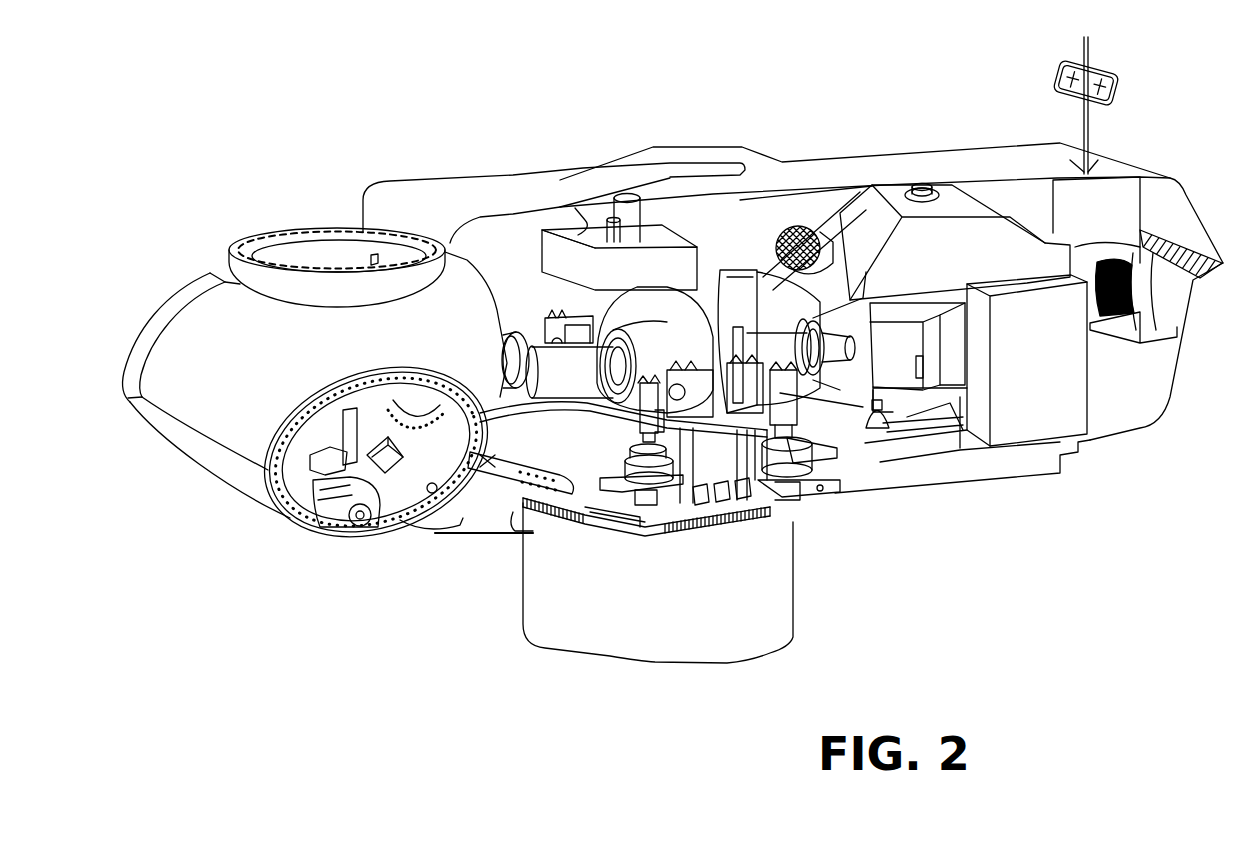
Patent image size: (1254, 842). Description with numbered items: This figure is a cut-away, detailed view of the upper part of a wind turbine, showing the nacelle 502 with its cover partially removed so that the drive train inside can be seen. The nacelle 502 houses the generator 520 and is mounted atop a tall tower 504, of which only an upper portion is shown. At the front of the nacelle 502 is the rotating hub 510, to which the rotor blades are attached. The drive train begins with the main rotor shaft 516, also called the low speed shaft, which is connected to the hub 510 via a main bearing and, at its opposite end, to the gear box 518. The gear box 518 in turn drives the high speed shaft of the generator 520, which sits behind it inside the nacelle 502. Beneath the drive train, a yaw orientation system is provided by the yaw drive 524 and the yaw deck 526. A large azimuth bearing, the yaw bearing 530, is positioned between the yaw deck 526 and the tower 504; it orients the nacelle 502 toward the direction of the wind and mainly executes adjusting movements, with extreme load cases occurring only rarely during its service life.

The nacelle 502 is at (440, 200).
The tower 504 is at (727, 645).
The hub 510 is at (255, 283).
The main rotor shaft 516 is at (538, 360).
The gear box 518 is at (721, 300).
The generator 520 is at (893, 360).
The yaw drive 524 is at (658, 493).
The yaw deck 526 is at (830, 507).
The yaw bearing 530 is at (520, 395).